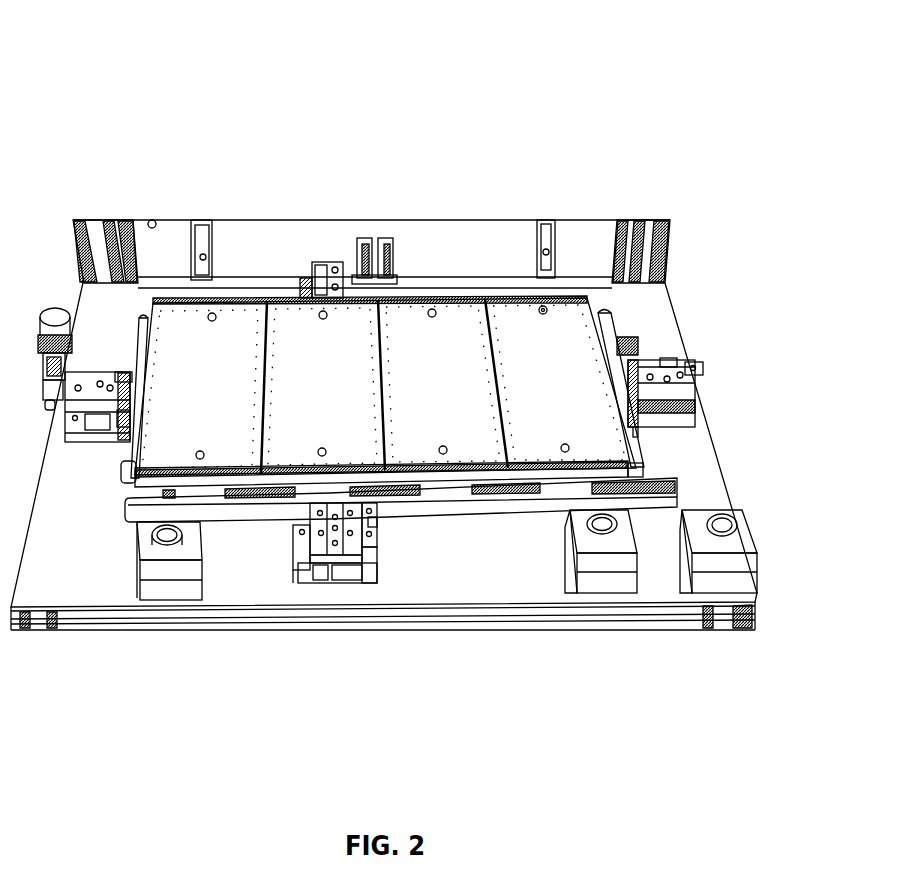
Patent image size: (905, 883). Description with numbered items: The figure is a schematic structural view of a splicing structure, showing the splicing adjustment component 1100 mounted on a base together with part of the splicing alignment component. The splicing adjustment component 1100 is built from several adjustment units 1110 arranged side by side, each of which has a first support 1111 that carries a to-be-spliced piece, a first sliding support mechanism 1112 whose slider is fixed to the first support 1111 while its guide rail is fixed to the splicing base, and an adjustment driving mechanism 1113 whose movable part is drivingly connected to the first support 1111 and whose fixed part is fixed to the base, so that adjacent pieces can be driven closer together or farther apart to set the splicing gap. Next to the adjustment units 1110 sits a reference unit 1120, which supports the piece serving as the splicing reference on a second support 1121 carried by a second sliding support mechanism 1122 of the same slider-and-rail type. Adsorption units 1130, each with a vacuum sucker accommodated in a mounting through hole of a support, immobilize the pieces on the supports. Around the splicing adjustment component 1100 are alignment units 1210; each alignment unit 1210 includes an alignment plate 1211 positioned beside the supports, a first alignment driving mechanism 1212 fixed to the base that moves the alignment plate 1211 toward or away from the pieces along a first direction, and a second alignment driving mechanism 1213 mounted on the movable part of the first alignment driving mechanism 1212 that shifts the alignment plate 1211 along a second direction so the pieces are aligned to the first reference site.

The splicing adjustment component 1100 is at (607, 102).
The adjustment unit 1110 is at (525, 155).
The first support 1111 is at (328, 348).
The first sliding support mechanism 1112 is at (424, 298).
The adjustment driving mechanism 1113 is at (548, 301).
The reference unit 1120 is at (285, 155).
The second support 1121 is at (208, 350).
The second sliding support mechanism 1122 is at (206, 310).
The adsorption unit 1130 is at (543, 310).
The alignment unit 1210 is at (418, 680).
The alignment plate 1211 is at (223, 513).
The first alignment driving mechanism 1212 is at (350, 543).
The second alignment driving mechanism 1213 is at (345, 614).